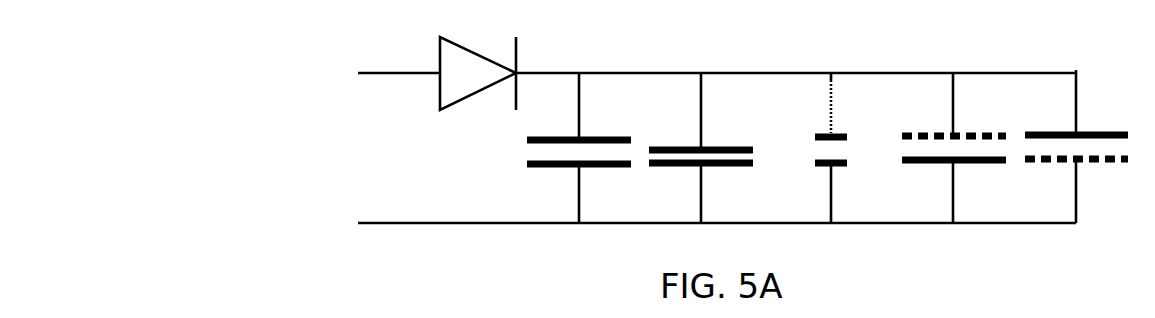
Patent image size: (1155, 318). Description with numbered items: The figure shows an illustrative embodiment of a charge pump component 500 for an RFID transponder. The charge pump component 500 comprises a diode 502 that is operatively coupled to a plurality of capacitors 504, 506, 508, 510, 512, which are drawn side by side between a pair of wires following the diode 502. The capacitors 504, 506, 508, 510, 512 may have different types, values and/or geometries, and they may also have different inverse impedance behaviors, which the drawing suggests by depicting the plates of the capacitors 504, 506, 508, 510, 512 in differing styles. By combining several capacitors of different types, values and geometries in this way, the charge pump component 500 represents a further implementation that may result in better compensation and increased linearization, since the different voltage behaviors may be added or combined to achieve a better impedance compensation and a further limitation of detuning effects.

The charge pump component 500 is at (326, 105).
The diode 502 is at (473, 50).
The capacitor 504 is at (599, 135).
The capacitor 506 is at (718, 146).
The capacitor 508 is at (840, 132).
The capacitor 510 is at (965, 132).
The capacitor 512 is at (1083, 132).